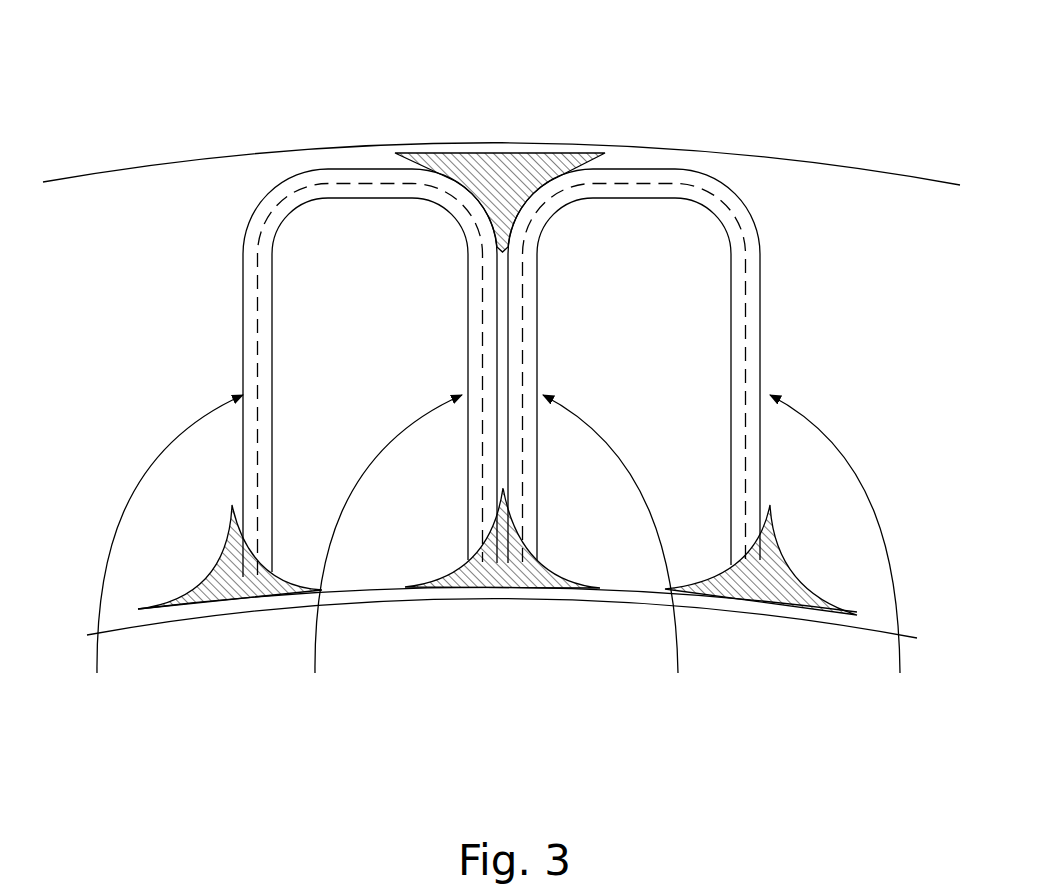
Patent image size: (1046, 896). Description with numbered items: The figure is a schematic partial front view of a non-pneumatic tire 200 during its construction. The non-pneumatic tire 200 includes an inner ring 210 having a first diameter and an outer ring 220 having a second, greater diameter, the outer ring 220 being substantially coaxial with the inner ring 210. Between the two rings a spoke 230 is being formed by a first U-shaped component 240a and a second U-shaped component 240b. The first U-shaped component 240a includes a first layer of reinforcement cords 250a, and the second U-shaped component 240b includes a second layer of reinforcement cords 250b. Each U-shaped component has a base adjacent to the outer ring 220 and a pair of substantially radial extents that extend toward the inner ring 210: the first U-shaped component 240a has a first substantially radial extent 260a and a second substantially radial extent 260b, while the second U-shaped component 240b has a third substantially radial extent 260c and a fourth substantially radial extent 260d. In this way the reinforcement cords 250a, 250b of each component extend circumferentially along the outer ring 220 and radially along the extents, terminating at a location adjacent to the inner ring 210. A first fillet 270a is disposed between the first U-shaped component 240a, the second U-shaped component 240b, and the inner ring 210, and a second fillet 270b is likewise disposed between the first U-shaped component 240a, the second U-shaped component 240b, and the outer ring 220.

The non-pneumatic tire 200 is at (707, 113).
The inner ring 210 is at (783, 623).
The outer ring 220 is at (870, 167).
The spoke 230 is at (515, 135).
The first U-shaped component 240a is at (343, 165).
The second U-shaped component 240b is at (630, 165).
The first layer of reinforcement cords 250a is at (302, 192).
The second layer of reinforcement cords 250b is at (717, 188).
The first substantially radial extent 260a is at (151, 557).
The second substantially radial extent 260b is at (371, 557).
The third substantially radial extent 260c is at (622, 557).
The fourth substantially radial extent 260d is at (852, 557).
The first fillet 270a is at (493, 583).
The second fillet 270b is at (467, 153).